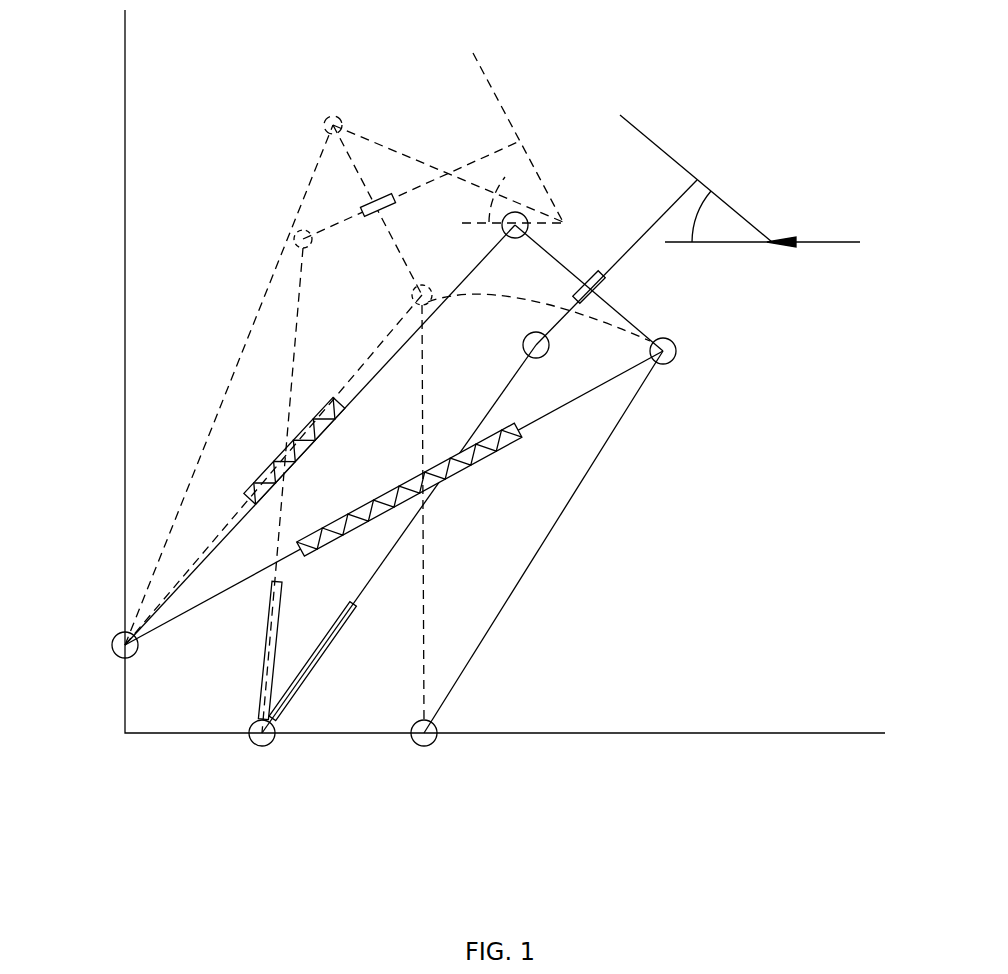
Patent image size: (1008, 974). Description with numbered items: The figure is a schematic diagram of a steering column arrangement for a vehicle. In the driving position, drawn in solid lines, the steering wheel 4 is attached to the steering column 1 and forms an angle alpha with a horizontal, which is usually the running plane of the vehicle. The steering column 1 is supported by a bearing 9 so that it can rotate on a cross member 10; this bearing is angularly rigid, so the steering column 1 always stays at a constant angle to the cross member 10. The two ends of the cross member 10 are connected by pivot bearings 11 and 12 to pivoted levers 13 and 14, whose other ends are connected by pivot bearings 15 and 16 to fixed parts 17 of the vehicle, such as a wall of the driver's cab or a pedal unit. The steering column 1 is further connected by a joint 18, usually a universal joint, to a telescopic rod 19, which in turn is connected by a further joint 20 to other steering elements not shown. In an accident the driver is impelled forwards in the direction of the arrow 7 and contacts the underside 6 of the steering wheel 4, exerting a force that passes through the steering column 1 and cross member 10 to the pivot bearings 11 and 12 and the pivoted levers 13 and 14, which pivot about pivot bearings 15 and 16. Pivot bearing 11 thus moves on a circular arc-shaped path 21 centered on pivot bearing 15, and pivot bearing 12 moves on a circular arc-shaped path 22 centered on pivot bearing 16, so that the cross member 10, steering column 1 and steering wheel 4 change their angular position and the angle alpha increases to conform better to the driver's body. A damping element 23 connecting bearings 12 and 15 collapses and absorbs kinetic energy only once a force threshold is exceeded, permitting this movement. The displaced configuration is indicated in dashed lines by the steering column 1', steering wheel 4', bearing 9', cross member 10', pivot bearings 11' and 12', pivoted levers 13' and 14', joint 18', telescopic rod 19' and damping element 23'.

The steering column 1 is at (616, 255).
The steering wheel 4 is at (696, 164).
The underside of the steering wheel 6 is at (752, 244).
The arrow 7 is at (830, 242).
The bearing 9 is at (621, 282).
The cross member 10 is at (616, 288).
The pivot bearing 11 is at (476, 238).
The pivot bearing 12 is at (705, 367).
The pivoted lever 13 is at (320, 435).
The pivoted lever 14 is at (543, 542).
The pivot bearing 15 is at (112, 638).
The pivot bearing 16 is at (424, 748).
The fixed parts of the vehicle 17 is at (125, 518).
The joint 18 is at (498, 363).
The telescopic rod 19 is at (329, 661).
The joint 20 is at (262, 748).
The circular arc-shaped path 21 is at (503, 296).
The circular arc-shaped path 22 is at (390, 148).
The damping element 23 is at (409, 489).
The linear actuator (displaced position) 23' is at (244, 450).
The lever arm (displaced position) 1' is at (411, 160).
The flap surface (displaced position) 4' is at (512, 128).
The sliding joint (displaced position) 9' is at (408, 207).
The connecting link (displaced position) 10' is at (375, 210).
The pivot joint (displaced position) 11' is at (306, 90).
The pivot joint (displaced position) 12' is at (379, 308).
The link (displaced position) 13' is at (229, 385).
The link (displaced position) 14' is at (460, 512).
The pivot joint (displaced position) 18' is at (275, 444).
The actuator rod (displaced position) 19' is at (236, 650).